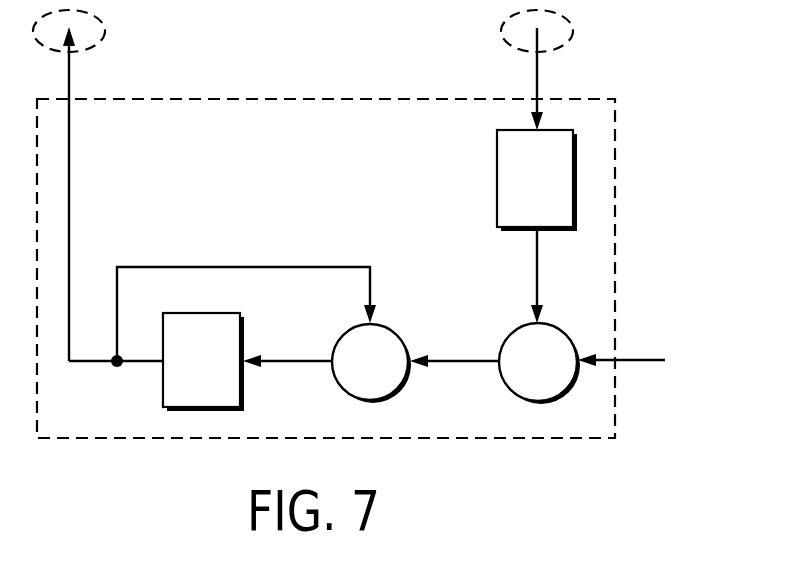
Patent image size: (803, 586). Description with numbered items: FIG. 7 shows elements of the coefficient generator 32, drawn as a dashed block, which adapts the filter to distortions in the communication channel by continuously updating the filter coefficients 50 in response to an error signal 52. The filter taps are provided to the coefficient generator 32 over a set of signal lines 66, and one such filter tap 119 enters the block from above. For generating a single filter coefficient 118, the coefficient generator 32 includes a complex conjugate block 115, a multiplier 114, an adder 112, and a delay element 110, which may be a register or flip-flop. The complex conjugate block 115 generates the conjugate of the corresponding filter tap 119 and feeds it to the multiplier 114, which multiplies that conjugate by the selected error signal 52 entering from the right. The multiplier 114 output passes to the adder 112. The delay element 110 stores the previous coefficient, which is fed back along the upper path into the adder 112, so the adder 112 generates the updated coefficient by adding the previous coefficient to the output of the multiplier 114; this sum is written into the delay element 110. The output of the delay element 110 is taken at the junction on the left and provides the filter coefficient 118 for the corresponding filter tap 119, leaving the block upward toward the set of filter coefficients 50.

The coefficient generator 32 is at (326, 268).
The filter coefficients 50 is at (105, 35).
The error signal 52 is at (652, 359).
The signal lines 66 is at (573, 35).
The delay element 110 is at (203, 362).
The adder 112 is at (371, 363).
The multiplier 114 is at (539, 363).
The complex conjugate block 115 is at (537, 180).
The filter coefficient 118 is at (70, 180).
The filter tap 119 is at (538, 70).